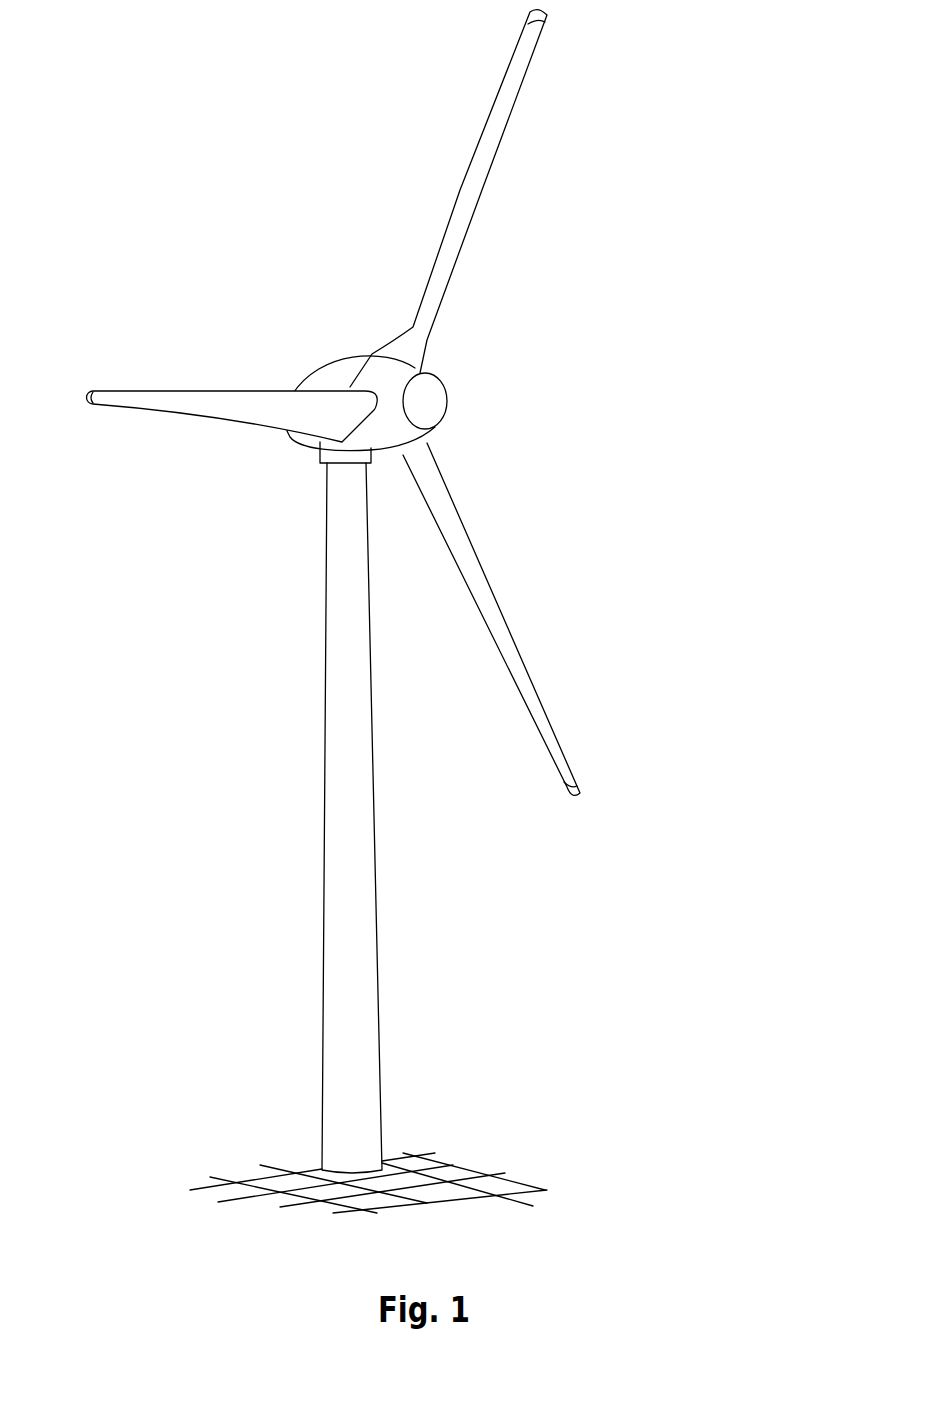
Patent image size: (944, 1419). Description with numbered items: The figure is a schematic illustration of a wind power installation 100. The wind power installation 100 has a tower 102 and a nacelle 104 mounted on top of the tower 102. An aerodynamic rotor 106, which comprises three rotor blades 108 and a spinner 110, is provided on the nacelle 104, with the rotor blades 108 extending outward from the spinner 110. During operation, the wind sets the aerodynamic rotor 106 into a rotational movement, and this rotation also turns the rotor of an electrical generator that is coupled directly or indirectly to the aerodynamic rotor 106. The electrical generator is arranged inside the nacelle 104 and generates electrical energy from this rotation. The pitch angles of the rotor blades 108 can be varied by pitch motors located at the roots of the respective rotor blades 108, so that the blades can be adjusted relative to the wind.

The wind power installation 100 is at (280, 525).
The tower 102 is at (355, 925).
The nacelle 104 is at (338, 375).
The aerodynamic rotor 106 is at (578, 282).
The rotor blade 108 is at (490, 145).
The spinner 110 is at (432, 402).